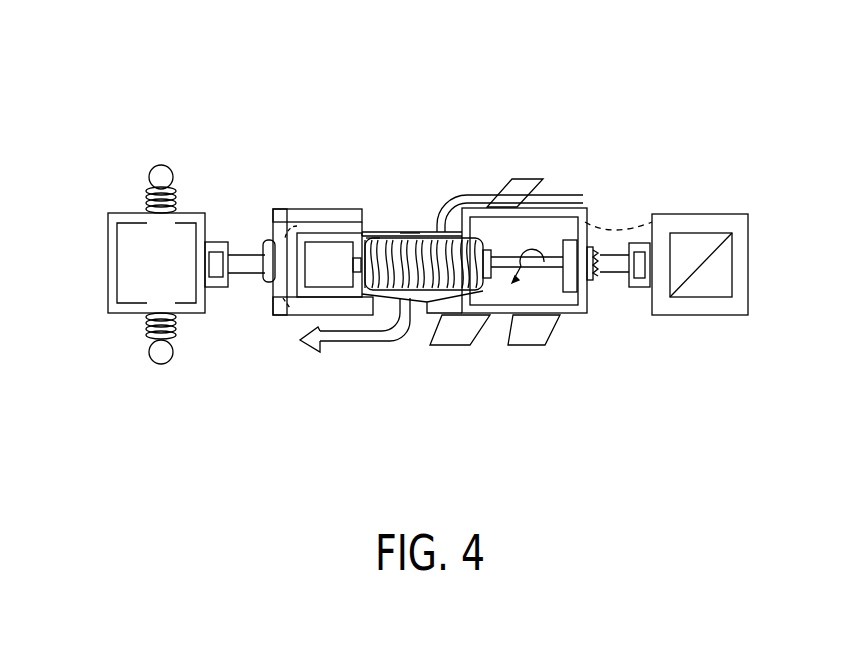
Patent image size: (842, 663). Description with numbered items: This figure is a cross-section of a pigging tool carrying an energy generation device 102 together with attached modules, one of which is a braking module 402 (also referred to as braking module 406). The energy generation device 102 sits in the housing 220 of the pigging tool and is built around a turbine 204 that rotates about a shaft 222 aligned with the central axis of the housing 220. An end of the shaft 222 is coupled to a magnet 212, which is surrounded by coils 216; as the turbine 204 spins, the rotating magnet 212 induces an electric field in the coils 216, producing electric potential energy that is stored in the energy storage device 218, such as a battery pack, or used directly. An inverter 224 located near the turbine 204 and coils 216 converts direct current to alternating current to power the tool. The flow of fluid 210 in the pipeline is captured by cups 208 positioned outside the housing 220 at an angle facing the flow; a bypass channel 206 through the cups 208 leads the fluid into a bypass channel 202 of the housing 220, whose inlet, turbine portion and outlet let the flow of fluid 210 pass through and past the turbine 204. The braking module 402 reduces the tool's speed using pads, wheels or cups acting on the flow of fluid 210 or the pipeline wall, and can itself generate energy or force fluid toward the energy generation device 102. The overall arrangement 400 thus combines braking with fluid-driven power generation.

The system 400 is at (135, 91).
The braking module 402 is at (118, 265).
The braking module 406 is at (186, 151).
The coils 216 is at (305, 208).
The energy storage device 218 is at (282, 243).
The magnet 212 is at (309, 273).
The turbine 204 is at (395, 252).
The inverter 224 is at (367, 246).
The housing 220 is at (375, 222).
The energy generation device 102 is at (408, 220).
The bypass channel 202 is at (444, 214).
The shaft 222 is at (553, 283).
The bypass channel 206 is at (526, 176).
The cups 208 is at (467, 361).
The flow of fluid 210 is at (353, 343).